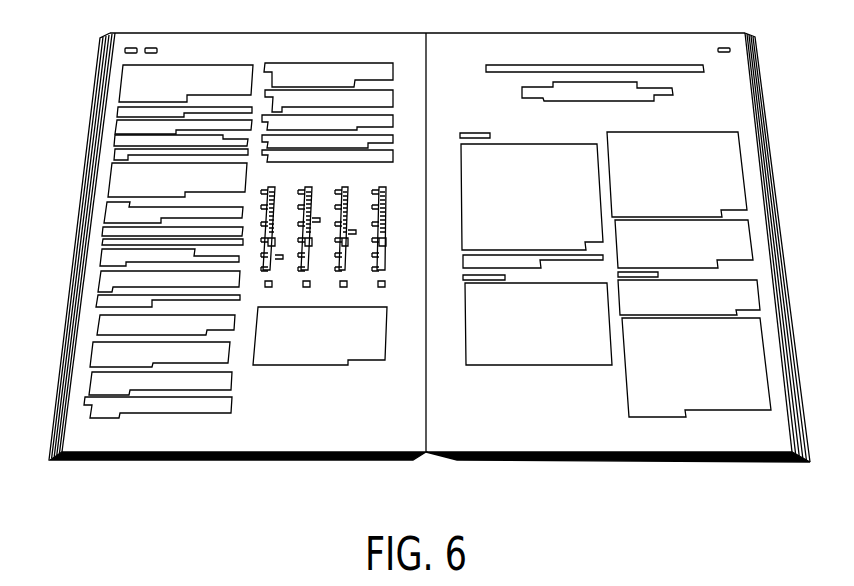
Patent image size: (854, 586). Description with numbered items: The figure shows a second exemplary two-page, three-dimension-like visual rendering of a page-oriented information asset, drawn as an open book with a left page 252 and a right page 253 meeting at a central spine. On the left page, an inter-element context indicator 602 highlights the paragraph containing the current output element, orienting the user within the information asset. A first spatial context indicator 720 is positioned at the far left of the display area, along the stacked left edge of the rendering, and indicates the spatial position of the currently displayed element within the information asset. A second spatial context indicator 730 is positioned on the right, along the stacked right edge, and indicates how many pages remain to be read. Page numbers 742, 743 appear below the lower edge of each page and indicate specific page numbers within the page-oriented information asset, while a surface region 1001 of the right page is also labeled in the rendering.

The first printed circuit board 252 is at (227, 242).
The second printed circuit board 253 is at (626, 242).
The inter-element context indicator 602 is at (258, 348).
The first spatial context indicator 720 is at (95, 68).
The second spatial context indicator 730 is at (762, 72).
The page number 742 is at (248, 442).
The page number 743 is at (612, 442).
The board surface 1001 is at (703, 107).